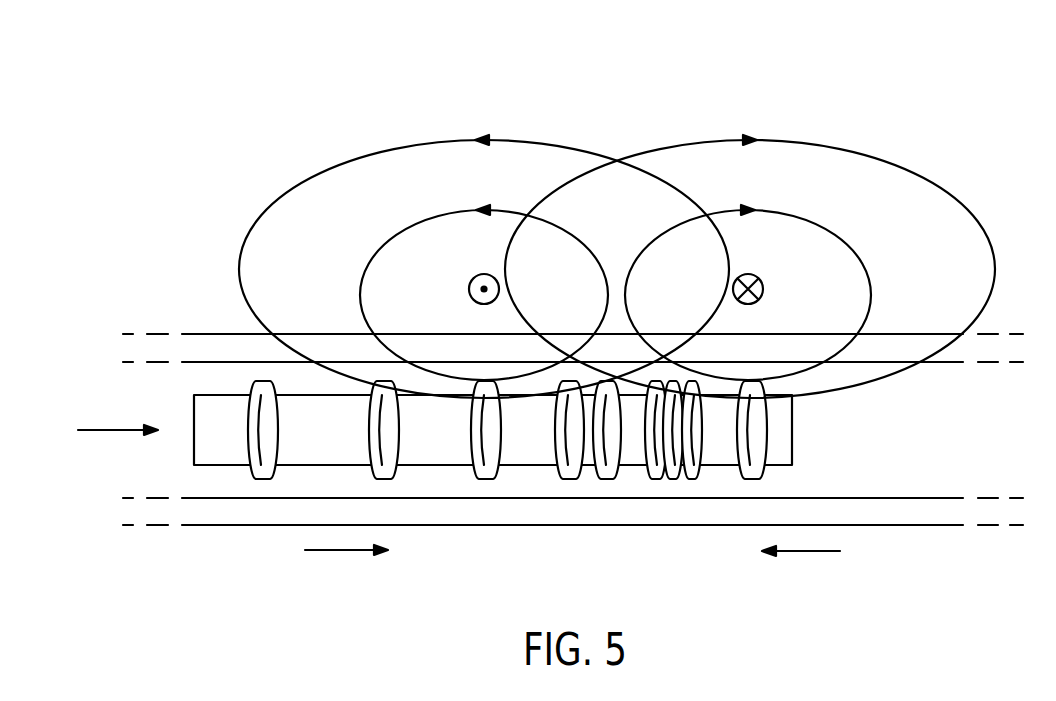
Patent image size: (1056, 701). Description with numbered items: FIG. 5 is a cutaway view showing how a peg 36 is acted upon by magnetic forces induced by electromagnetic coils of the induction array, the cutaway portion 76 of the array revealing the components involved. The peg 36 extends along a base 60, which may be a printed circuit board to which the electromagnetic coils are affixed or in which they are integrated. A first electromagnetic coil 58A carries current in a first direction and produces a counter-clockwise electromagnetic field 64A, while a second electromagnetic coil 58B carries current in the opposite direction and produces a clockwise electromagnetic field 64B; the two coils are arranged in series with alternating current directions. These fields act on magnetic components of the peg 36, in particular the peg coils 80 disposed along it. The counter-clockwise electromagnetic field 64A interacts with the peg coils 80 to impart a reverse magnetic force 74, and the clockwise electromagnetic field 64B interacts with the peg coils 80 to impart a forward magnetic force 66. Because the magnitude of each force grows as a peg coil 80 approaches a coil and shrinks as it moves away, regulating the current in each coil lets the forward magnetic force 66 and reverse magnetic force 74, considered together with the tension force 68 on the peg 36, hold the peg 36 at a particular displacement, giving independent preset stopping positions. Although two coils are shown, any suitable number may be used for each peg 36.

The peg 36 is at (193, 412).
The first electromagnetic coil 58A is at (470, 289).
The second electromagnetic coil 58B is at (763, 289).
The base 60 is at (230, 527).
The counter-clockwise electromagnetic field 64A is at (440, 141).
The clockwise electromagnetic field 64B is at (795, 141).
The forward magnetic force 66 is at (808, 552).
The tension force 68 is at (108, 428).
The reverse magnetic force 74 is at (334, 552).
The cutaway portion 76 is at (878, 70).
The peg coils 80 is at (650, 480).